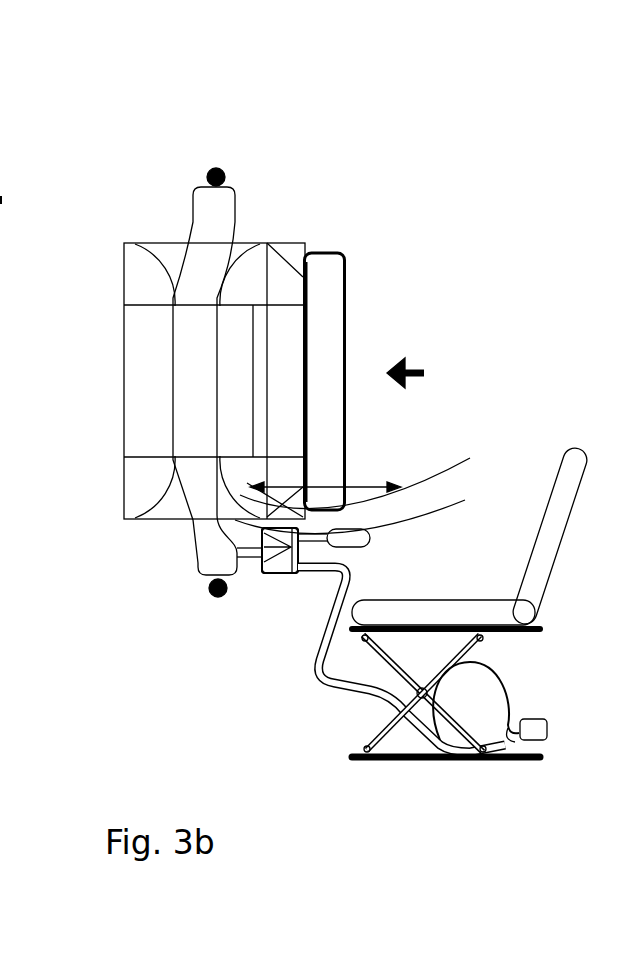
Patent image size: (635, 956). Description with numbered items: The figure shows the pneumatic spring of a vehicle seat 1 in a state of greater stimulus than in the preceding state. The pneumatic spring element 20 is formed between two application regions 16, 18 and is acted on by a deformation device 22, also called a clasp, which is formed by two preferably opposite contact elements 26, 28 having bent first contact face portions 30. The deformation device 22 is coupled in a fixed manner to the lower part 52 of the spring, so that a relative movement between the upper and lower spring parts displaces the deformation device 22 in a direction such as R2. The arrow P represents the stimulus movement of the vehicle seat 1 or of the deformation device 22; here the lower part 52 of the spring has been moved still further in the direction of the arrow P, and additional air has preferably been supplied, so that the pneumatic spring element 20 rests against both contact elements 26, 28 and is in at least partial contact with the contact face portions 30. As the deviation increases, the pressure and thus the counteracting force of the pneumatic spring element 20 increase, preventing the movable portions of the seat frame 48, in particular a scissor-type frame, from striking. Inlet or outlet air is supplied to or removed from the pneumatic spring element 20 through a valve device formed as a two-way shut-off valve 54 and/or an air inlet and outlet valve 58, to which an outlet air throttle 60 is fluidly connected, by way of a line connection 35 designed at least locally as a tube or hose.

The vehicle seat 1 is at (576, 670).
The application region 16 is at (212, 172).
The application region 18 is at (213, 593).
The pneumatic spring element 20 is at (212, 248).
The deformation device 22 is at (155, 550).
The contact element 26 is at (145, 356).
The contact element 28 is at (267, 243).
The first contact face portion 30 is at (220, 270).
The line connection 35 is at (312, 676).
The seat frame 48 is at (407, 640).
The lower part of the spring 52 is at (335, 256).
The two-way shut-off valve 54 is at (275, 565).
The air inlet and outlet valve 58 is at (264, 635).
The outlet air throttle 60 is at (465, 500).
The arrow P is at (400, 356).
The direction R2 is at (0, 540).